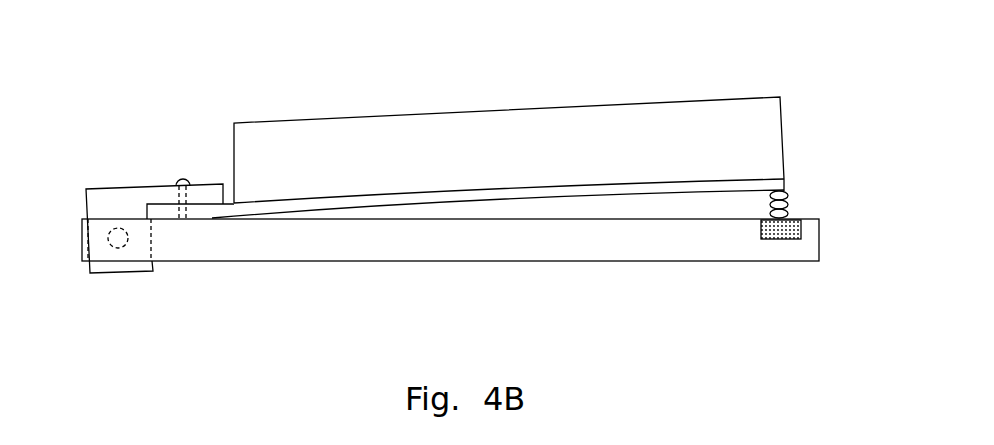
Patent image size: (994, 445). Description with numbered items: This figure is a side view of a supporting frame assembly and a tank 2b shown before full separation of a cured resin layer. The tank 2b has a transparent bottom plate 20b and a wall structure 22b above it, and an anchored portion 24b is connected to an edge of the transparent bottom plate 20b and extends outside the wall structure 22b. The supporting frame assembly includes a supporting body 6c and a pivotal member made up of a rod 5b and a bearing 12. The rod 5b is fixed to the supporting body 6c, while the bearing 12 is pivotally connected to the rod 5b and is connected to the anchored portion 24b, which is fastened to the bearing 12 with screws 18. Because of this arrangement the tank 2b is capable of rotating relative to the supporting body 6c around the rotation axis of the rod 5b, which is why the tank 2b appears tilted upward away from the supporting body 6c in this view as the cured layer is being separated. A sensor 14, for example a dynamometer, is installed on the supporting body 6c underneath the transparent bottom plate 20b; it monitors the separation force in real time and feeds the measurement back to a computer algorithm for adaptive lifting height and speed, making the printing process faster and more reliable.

The tank 2b is at (500, 119).
The transparent bottom plate 20b is at (523, 197).
The wall structure 22b is at (642, 125).
The anchored portion 24b is at (208, 217).
The bearing 12 is at (120, 183).
The screws 18 is at (182, 179).
The rod 5b is at (120, 248).
The supporting body 6c is at (646, 261).
The sensor 14 is at (779, 239).